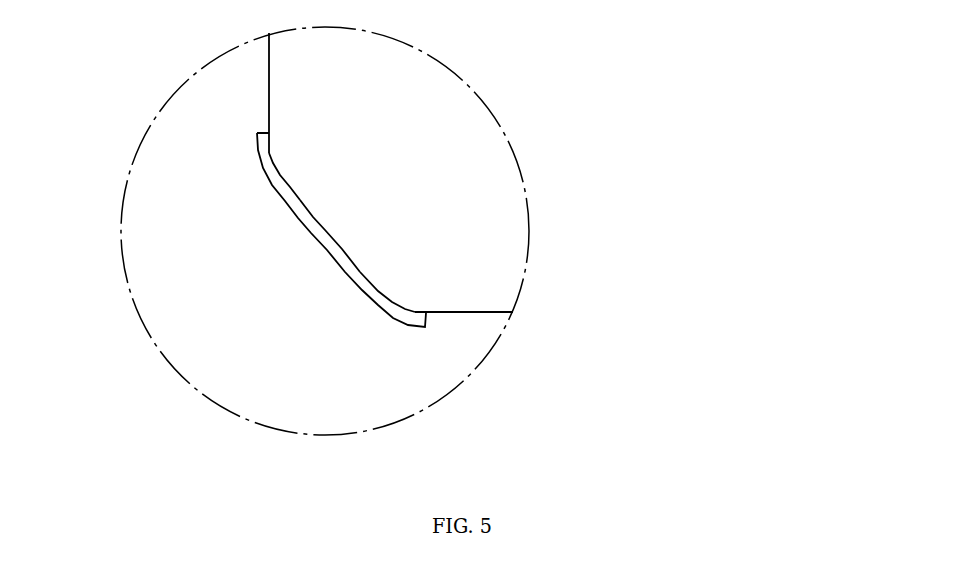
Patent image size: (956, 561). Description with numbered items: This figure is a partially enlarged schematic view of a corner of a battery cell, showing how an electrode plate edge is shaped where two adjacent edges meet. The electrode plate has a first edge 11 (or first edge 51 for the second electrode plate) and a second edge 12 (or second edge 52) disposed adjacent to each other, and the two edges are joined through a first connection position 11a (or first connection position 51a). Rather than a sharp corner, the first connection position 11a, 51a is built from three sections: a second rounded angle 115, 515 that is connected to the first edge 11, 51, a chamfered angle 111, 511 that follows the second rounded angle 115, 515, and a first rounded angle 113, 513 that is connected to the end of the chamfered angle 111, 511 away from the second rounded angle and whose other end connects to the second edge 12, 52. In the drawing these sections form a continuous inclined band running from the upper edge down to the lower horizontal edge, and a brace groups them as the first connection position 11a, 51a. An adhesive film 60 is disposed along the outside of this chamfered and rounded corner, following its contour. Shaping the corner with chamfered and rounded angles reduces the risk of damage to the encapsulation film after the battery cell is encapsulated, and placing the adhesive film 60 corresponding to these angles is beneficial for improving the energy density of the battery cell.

The first edge 11 is at (163, 92).
The first edge 51 is at (268, 98).
The first connection position 11a is at (542, 157).
The first connection position 51a is at (593, 5).
The second rounded angle 115 is at (434, 107).
The second rounded angle 515 is at (275, 155).
The chamfered angle 111 is at (470, 170).
The chamfered angle 511 is at (318, 218).
The first rounded angle 113 is at (533, 220).
The first rounded angle 513 is at (392, 303).
The adhesive film 60 is at (298, 208).
The second edge 12 is at (538, 369).
The second edge 52 is at (470, 315).